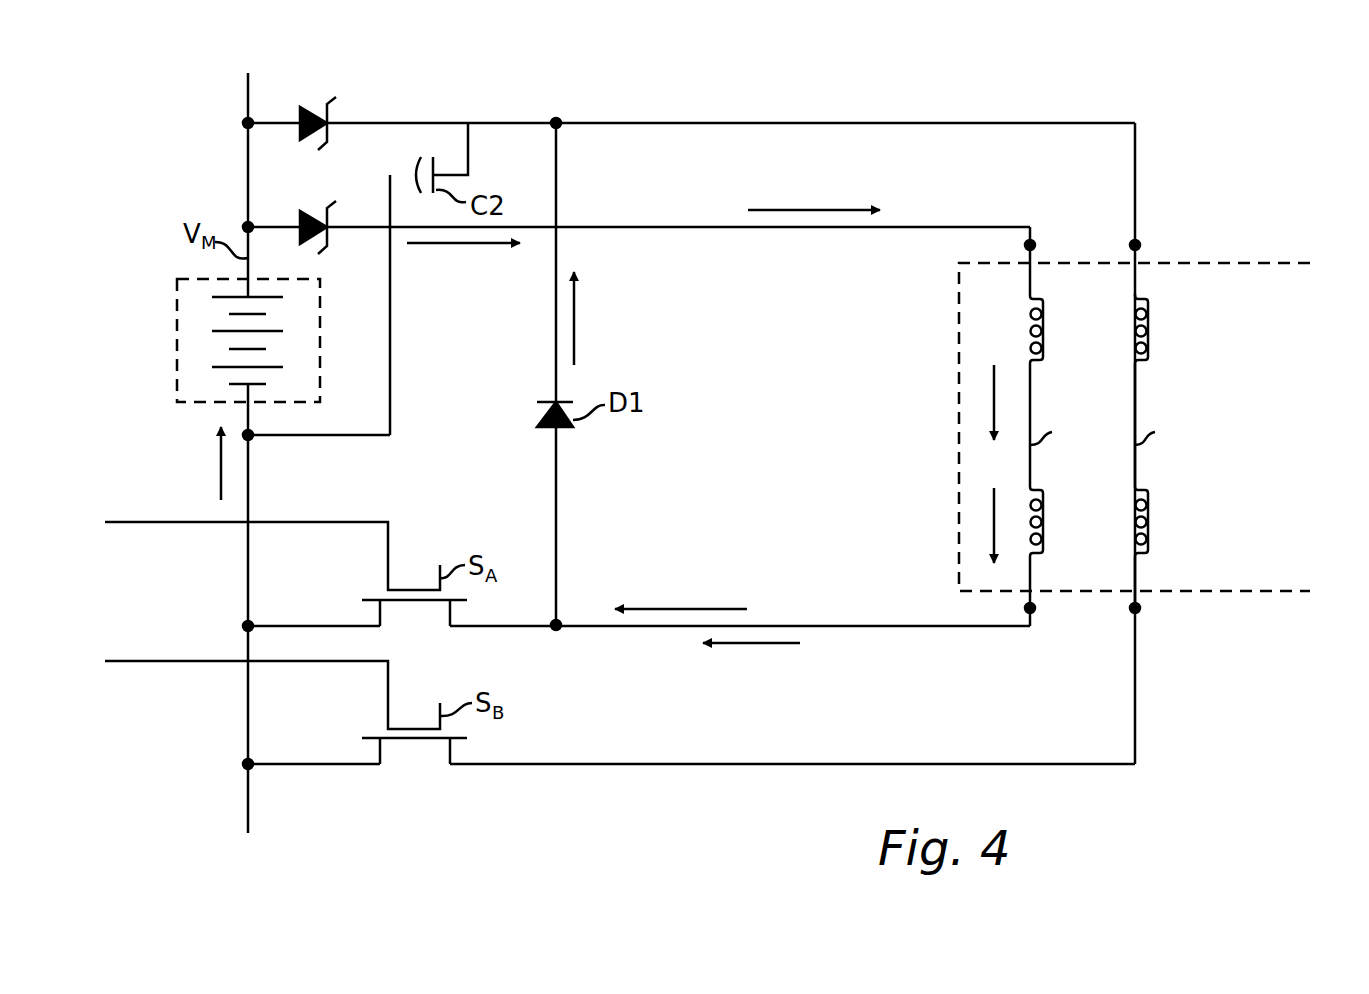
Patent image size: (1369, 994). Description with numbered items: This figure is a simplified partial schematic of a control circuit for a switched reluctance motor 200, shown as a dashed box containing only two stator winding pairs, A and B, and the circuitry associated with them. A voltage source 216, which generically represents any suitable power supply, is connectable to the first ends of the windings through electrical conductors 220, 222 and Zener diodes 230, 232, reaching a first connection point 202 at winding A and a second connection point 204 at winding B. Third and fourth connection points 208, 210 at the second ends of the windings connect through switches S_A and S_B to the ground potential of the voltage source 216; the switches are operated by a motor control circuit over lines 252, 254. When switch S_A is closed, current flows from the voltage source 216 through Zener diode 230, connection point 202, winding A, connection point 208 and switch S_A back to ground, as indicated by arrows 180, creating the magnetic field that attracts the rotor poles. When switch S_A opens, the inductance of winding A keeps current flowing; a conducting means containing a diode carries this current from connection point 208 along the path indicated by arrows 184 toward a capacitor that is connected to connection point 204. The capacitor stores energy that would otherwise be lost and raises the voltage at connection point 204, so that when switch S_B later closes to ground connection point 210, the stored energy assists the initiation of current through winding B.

The arrows indicating current path 180 is at (221, 470).
The arrows indicating current path 184 is at (575, 323).
The switched reluctance motor 200 is at (1215, 591).
The first connection point 202 is at (1033, 245).
The second connection point 204 is at (1140, 245).
The third connection point 208 is at (1033, 610).
The fourth connection point 210 is at (1138, 612).
The voltage source 216 is at (177, 323).
The electrical conductor 220 is at (938, 228).
The electrical conductor 222 is at (1000, 123).
The Zener diode 230 is at (333, 212).
The Zener diode 232 is at (317, 100).
The line 252 is at (205, 522).
The line 254 is at (208, 661).